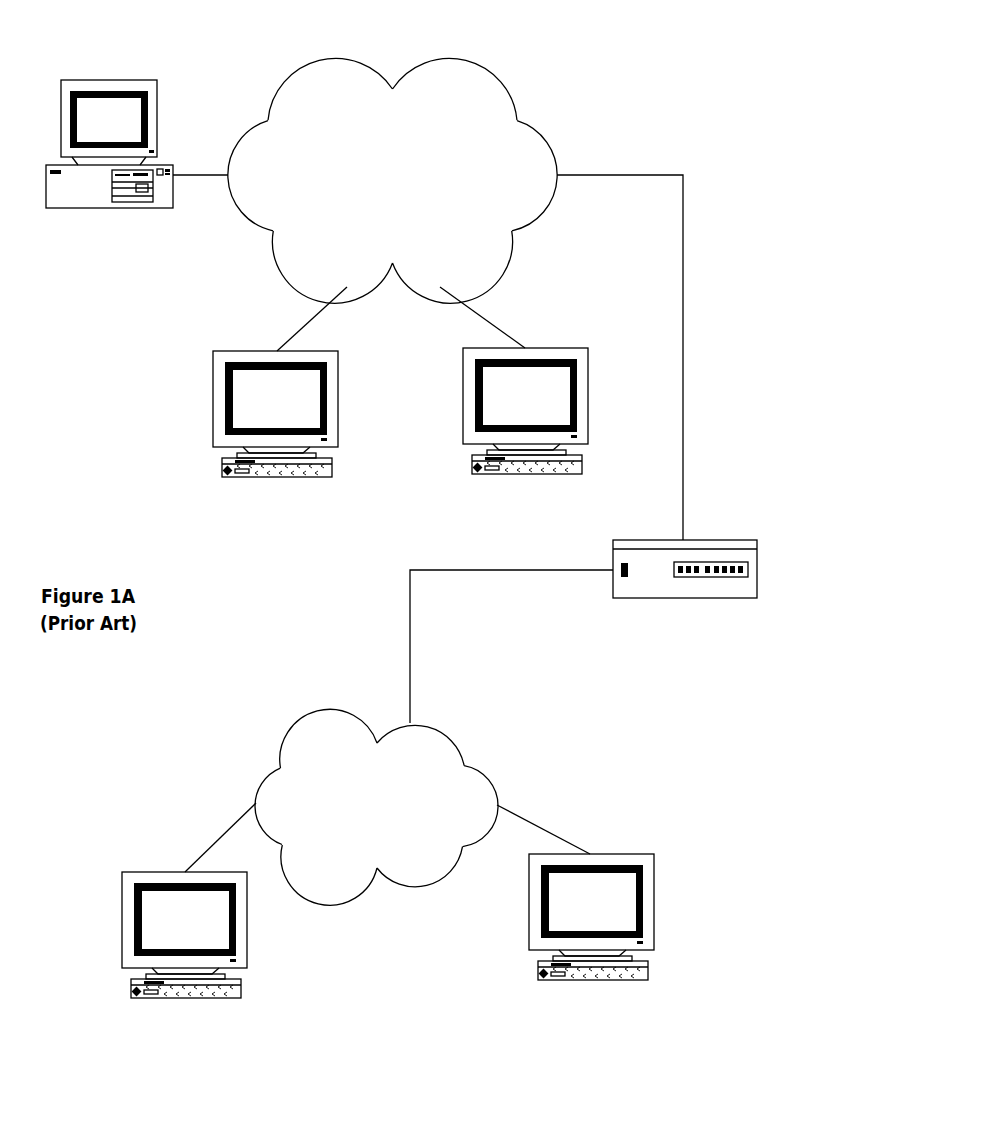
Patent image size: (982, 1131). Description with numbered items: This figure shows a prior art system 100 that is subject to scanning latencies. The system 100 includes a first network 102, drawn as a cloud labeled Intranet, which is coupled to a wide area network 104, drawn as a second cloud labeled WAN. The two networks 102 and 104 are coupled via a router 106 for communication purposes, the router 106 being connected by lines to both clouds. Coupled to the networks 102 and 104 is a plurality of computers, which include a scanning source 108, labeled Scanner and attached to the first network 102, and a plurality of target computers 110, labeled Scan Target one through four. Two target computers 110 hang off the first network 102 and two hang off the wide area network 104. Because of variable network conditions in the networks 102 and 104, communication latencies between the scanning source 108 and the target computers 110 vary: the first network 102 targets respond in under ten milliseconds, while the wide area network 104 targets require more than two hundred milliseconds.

The system 100 is at (762, 237).
The Internet 102 is at (442, 62).
The wide area network (WAN) 104 is at (340, 723).
The router 106 is at (757, 570).
The scanning source 108 is at (108, 80).
The target computers 110 is at (213, 415).